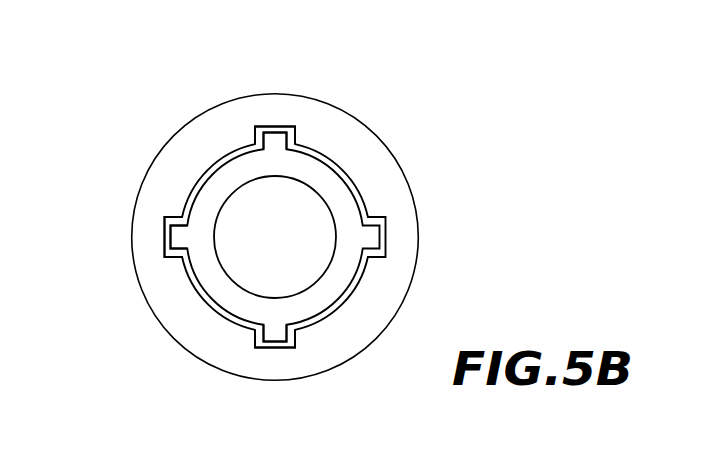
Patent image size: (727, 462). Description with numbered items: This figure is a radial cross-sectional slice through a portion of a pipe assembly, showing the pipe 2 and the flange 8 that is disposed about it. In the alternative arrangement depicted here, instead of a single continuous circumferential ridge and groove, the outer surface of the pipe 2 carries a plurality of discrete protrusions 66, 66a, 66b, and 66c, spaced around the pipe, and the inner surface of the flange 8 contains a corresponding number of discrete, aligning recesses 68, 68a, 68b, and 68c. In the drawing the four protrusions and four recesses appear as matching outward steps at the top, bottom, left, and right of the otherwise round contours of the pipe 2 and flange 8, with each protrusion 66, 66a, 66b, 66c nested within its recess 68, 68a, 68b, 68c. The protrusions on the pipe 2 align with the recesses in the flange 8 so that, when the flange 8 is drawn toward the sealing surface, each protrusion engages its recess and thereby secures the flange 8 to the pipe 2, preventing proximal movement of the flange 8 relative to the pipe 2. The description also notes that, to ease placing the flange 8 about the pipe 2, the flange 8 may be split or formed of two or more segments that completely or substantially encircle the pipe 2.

The pipe 2 is at (223, 180).
The flange 8 is at (157, 188).
The protrusion 66 is at (373, 238).
The protrusion 66a is at (277, 141).
The protrusion 66b is at (172, 238).
The protrusion 66c is at (277, 333).
The recess 68 is at (383, 253).
The recess 68a is at (262, 130).
The recess 68b is at (165, 250).
The recess 68c is at (262, 347).